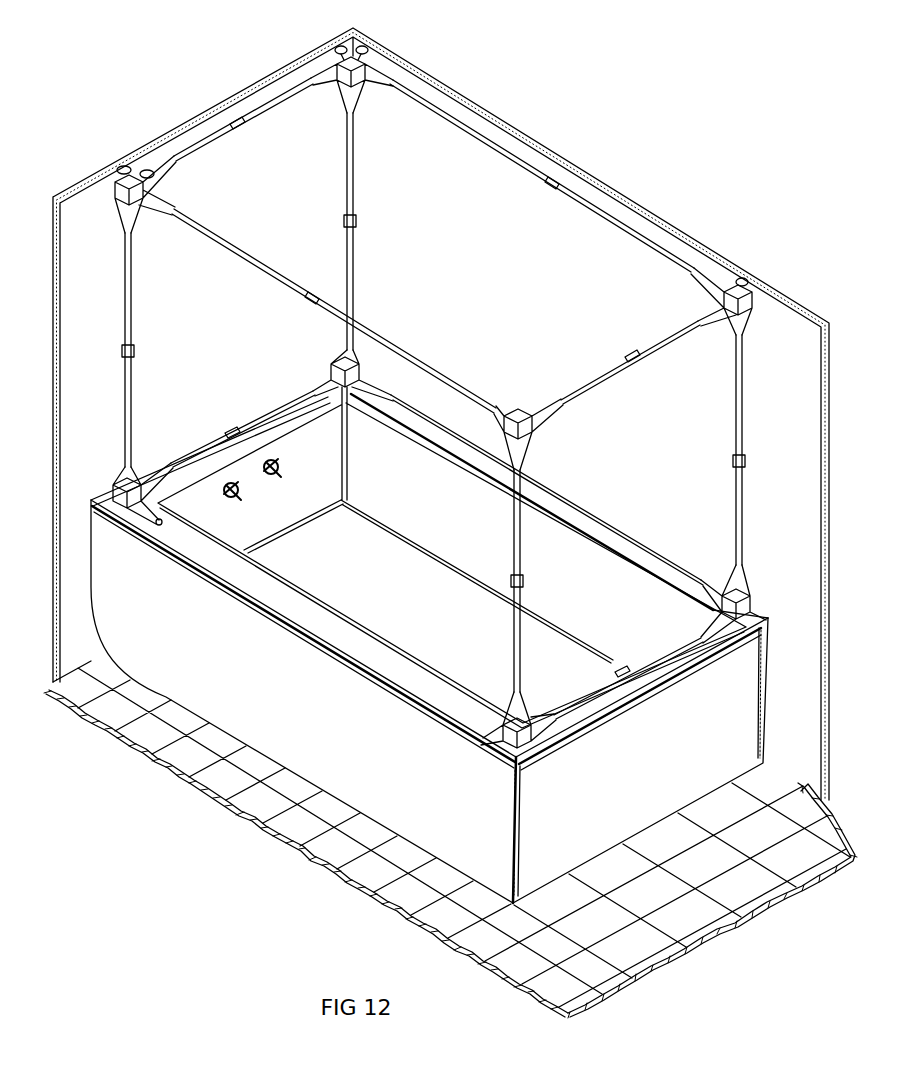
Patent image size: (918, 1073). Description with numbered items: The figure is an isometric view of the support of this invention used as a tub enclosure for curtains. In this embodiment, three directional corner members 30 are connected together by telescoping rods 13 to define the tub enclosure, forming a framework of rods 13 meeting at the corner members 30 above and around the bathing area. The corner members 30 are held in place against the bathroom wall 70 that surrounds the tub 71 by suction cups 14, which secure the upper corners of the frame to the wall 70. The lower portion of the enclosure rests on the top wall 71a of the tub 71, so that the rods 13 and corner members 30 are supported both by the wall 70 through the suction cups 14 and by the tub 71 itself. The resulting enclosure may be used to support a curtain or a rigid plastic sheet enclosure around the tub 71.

The telescoping rods 13 is at (270, 106).
The suction cups 14 is at (337, 46).
The three directional corner members 30 is at (153, 200).
The bathroom wall 70 is at (191, 330).
The tub 71 is at (265, 707).
The top wall of the tub 71a is at (316, 616).